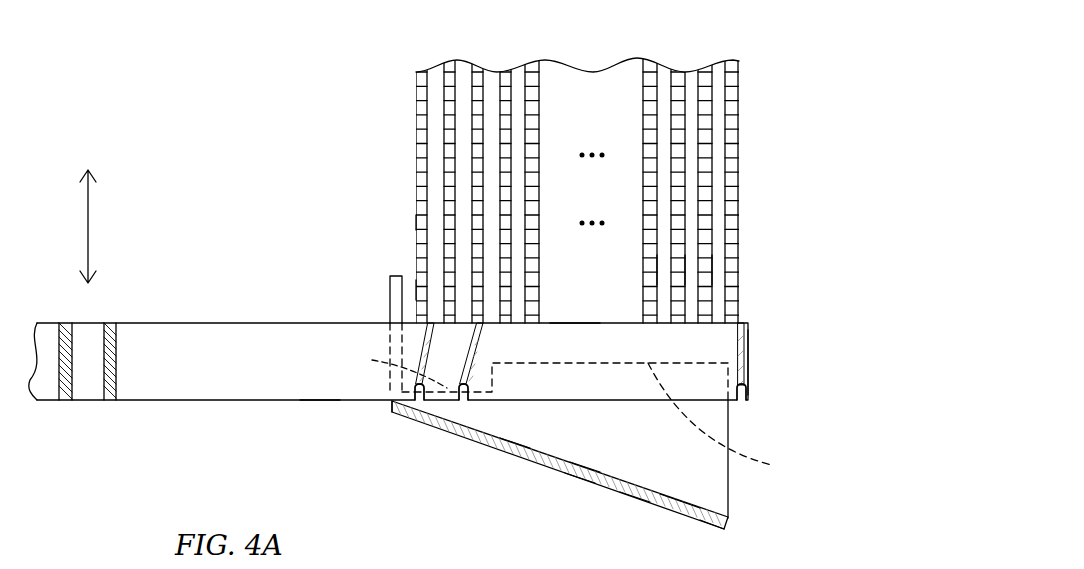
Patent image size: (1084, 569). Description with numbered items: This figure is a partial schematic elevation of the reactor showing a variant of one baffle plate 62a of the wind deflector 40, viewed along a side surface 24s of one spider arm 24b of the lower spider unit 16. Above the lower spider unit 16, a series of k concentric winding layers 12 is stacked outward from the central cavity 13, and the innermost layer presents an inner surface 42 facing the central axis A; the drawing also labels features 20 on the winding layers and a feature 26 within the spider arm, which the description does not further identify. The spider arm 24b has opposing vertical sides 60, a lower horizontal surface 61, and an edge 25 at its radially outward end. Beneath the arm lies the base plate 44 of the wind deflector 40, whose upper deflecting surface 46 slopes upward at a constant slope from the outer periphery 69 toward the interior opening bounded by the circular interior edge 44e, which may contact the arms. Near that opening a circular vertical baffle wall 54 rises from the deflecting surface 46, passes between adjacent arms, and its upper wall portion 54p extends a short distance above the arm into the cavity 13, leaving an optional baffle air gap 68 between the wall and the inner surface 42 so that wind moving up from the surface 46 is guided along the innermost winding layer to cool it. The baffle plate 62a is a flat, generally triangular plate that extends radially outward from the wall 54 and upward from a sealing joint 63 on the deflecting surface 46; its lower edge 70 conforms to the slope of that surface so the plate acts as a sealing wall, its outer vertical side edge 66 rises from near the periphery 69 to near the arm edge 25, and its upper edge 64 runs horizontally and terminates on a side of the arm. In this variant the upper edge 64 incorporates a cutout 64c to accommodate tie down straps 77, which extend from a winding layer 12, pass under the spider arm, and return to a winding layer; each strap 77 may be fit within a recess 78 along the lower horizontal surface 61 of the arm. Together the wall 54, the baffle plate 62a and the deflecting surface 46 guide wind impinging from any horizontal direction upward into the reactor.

The winding layers 12 is at (593, 166).
The central cavity 13 is at (242, 238).
The lower spider unit 16 is at (388, 342).
The plate slots 20 is at (715, 270).
The side surface of arm 24s is at (567, 340).
The spider arm 24b is at (678, 383).
The edge of spider arm 25 is at (750, 362).
The guide bushing 26 is at (85, 335).
The wind deflector 40 is at (676, 536).
The inner surface of innermost winding layer 42 is at (417, 222).
The base plate 44 is at (515, 455).
The interior edge of base plate 44e is at (390, 406).
The upper deflecting surface 46 is at (512, 440).
The circular vertical baffle wall 54 is at (344, 331).
The wall portion 54p is at (388, 292).
The vertical sides of arm 60 is at (215, 383).
The lower horizontal surface of arm 61 is at (322, 403).
The baffle plate 62a is at (628, 512).
The sealing joint 63 is at (583, 468).
The upper edge of baffle plate 64 is at (725, 421).
The cutout 64c is at (372, 360).
The outer vertical side edge 66 is at (735, 493).
The baffle air gap 68 is at (410, 285).
The outer periphery of base plate 69 is at (722, 527).
The lower edge of baffle plate 70 is at (580, 477).
The tie down straps 77 is at (483, 345).
The recess 78 is at (463, 400).
The central axis A is at (89, 228).